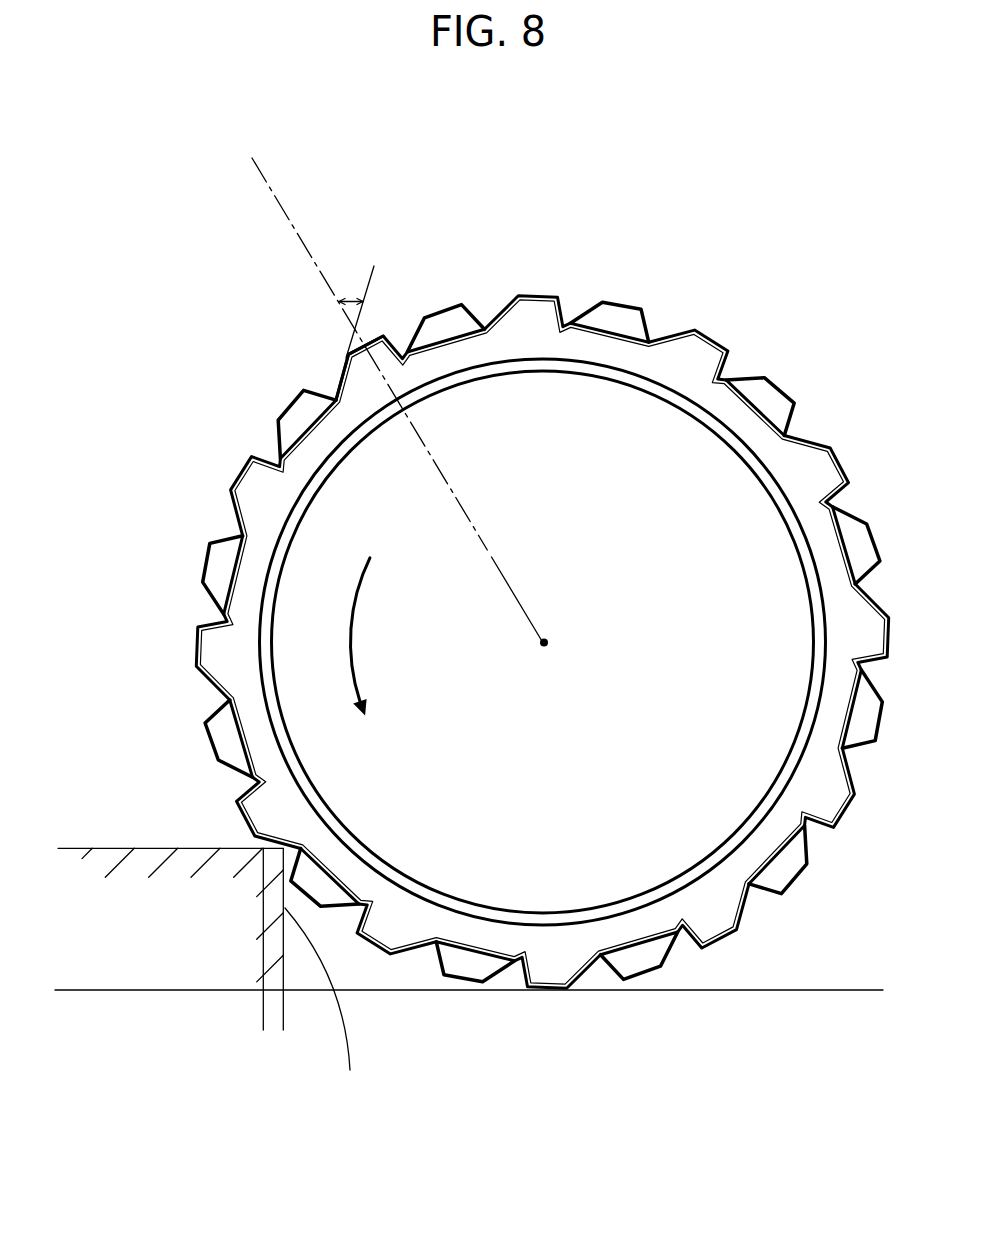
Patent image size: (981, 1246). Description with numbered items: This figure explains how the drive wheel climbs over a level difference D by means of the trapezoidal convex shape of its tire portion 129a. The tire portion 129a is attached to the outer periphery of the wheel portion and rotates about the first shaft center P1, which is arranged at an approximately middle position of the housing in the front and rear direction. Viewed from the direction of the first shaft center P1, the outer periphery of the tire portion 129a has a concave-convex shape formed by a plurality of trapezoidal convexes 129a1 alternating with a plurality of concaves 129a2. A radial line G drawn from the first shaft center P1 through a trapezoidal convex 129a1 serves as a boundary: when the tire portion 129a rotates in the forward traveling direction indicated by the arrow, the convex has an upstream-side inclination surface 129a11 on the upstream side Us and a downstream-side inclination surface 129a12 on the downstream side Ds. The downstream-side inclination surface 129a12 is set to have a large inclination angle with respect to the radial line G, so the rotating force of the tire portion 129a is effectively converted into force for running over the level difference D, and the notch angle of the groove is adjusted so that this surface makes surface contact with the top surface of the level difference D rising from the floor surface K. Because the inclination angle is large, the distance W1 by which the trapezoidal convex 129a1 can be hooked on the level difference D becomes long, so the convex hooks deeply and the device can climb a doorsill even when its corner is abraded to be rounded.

The tire portion 129a is at (541, 555).
The trapezoidal convex 129a1 is at (708, 340).
The concave 129a2 is at (765, 403).
The upstream-side inclination surface 129a11 is at (396, 337).
The downstream-side inclination surface 129a12 is at (344, 370).
The upstream side Us is at (369, 346).
The downstream side Ds is at (290, 266).
The radial line G is at (495, 557).
The first shaft center P1 is at (556, 662).
The floor surface K is at (825, 990).
The distance W1 is at (317, 1022).
The level difference D is at (323, 1006).